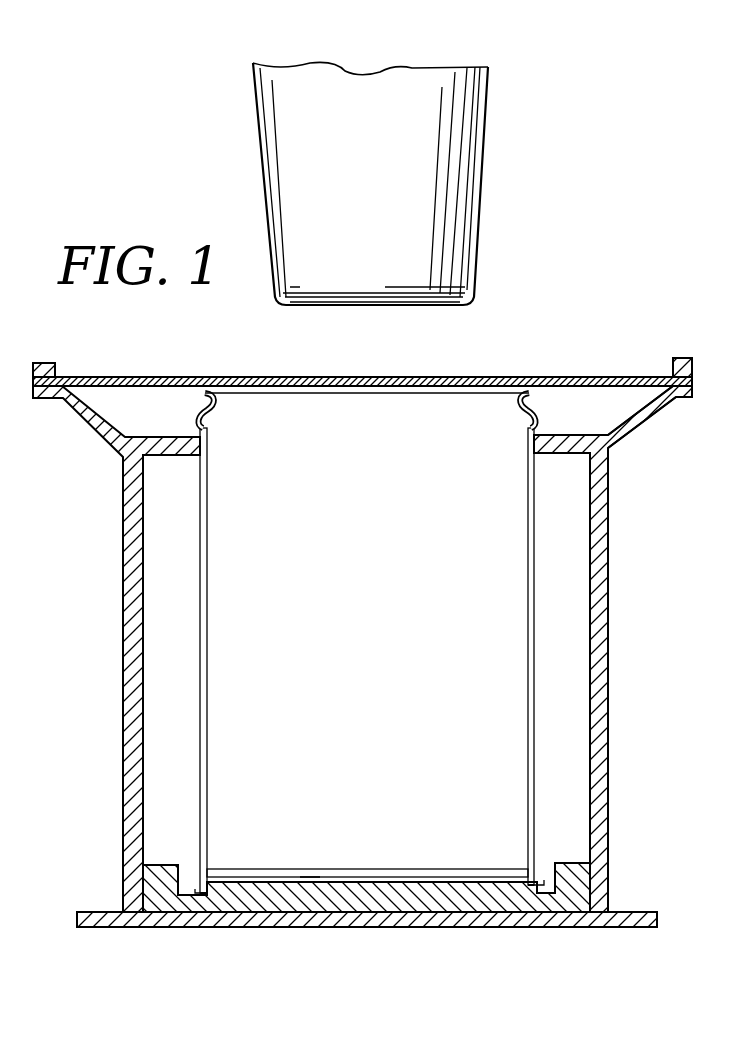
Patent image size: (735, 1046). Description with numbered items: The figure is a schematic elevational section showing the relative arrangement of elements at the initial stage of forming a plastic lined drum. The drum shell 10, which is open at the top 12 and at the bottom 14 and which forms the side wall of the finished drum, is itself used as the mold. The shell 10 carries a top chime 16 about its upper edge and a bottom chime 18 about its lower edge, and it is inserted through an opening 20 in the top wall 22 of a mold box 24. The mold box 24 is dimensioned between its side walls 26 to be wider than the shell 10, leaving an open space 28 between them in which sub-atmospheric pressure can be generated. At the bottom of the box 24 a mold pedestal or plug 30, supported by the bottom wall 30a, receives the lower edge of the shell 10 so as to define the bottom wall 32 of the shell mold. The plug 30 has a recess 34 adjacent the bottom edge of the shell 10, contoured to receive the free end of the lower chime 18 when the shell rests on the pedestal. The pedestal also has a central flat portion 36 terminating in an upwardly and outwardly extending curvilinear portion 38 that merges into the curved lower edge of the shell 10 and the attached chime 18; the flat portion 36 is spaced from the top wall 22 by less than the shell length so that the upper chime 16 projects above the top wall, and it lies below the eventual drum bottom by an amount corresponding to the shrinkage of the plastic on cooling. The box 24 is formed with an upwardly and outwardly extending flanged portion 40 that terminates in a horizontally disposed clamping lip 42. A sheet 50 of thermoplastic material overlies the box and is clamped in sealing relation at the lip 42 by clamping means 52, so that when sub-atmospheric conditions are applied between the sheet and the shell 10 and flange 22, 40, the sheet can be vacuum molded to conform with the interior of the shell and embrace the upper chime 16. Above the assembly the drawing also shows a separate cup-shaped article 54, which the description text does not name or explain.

The shell 10 is at (372, 666).
The top 12 is at (364, 434).
The bottom 14 is at (348, 854).
The top chime 16 is at (541, 408).
The bottom chime 18 is at (534, 858).
The opening 20 is at (214, 447).
The top wall 22 is at (163, 436).
The mold box 24 is at (608, 748).
The side walls 26 is at (123, 588).
The open space 28 is at (168, 753).
The mold pedestal or plug 30 is at (486, 908).
The bottom wall 30a is at (90, 912).
The bottom wall of the shell mold 32 is at (447, 882).
The recess 34 is at (185, 892).
The central flat portion 36 is at (310, 878).
The curvilinear portion 38 is at (213, 877).
The flanged portion 40 is at (633, 428).
The clamping lip 42 is at (681, 398).
The sheet of thermoplastic material 50 is at (187, 377).
The clamping means 52 is at (40, 370).
The cup 54 is at (388, 189).